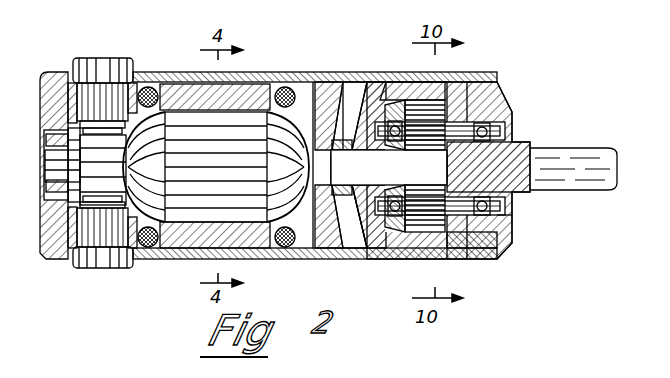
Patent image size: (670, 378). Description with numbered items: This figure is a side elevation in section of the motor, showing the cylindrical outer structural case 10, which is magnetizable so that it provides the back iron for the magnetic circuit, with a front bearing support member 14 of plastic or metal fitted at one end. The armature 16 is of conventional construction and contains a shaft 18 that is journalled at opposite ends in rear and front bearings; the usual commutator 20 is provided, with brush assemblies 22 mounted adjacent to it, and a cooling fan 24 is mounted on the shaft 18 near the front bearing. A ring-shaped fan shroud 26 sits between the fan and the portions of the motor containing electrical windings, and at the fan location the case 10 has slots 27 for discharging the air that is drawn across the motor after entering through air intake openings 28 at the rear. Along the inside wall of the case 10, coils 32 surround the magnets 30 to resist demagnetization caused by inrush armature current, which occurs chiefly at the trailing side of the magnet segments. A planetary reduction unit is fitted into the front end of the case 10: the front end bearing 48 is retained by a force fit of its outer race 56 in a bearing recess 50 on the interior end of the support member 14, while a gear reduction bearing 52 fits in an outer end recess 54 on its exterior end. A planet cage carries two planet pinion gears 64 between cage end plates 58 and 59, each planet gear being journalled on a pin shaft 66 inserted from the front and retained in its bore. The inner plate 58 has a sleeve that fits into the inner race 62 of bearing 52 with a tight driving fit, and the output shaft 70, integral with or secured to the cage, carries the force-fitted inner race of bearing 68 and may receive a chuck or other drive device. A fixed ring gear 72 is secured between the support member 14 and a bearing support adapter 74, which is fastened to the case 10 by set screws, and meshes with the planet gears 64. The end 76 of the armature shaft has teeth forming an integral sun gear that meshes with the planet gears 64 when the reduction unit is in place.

The outer structural case 10 is at (270, 73).
The front bearing support member 14 is at (395, 78).
The armature 16 is at (228, 168).
The shaft 18 is at (72, 155).
The commutator 20 is at (60, 178).
The brush assemblies 22 is at (105, 90).
The cooling fan 24 is at (321, 258).
The fan shroud 26 is at (306, 262).
The slots 27 is at (353, 78).
The air intake openings 28 is at (42, 86).
The magnets 30 is at (178, 97).
The coils 32 is at (290, 88).
The front end bearing 48 is at (344, 190).
The bearing recess 50 is at (347, 138).
The gear reduction bearing 52 is at (398, 80).
The outer end recess 54 is at (383, 80).
The outer race 56 is at (358, 240).
The inner cage end plate 58 is at (386, 224).
The cage end plate 59 is at (476, 258).
The inner race 62 is at (406, 250).
The planet pinion gears 64 is at (445, 85).
The pin shaft 66 is at (505, 110).
The bearing 68 is at (512, 133).
The output shaft 70 is at (568, 150).
The fixed ring gear 72 is at (440, 258).
The bearing support adapter 74 is at (492, 245).
The end of armature shaft 76 is at (447, 164).